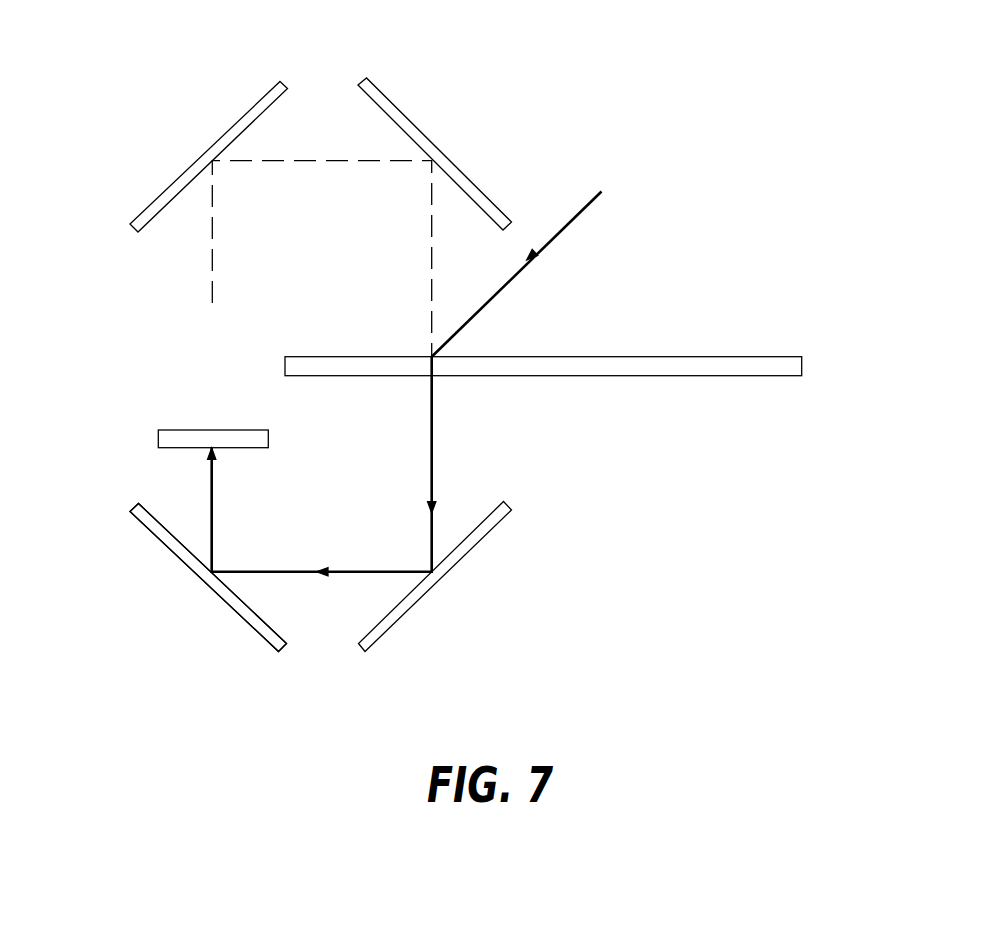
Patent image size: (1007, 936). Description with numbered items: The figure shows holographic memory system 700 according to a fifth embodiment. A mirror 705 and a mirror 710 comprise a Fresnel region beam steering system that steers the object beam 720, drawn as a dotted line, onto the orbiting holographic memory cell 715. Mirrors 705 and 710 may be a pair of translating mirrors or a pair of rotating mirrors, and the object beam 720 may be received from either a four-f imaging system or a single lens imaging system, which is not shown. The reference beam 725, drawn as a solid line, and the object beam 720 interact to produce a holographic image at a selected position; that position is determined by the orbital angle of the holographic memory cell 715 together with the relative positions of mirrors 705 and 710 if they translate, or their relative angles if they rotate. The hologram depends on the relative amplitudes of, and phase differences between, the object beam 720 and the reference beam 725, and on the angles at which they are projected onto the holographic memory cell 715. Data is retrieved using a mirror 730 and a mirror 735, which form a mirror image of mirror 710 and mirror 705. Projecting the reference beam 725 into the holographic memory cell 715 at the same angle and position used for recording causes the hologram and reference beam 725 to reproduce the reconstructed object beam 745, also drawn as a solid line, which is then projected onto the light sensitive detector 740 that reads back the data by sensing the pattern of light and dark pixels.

The holographic memory system 700 is at (580, 612).
The mirror 705 is at (279, 77).
The mirror 710 is at (365, 77).
The holographic memory cell 715 is at (803, 365).
The object beam 720 is at (210, 263).
The reference beam 725 is at (577, 220).
The mirror 730 is at (366, 653).
The mirror 735 is at (280, 653).
The light sensitive detector 740 is at (130, 509).
The reconstructed object beam 745 is at (434, 450).